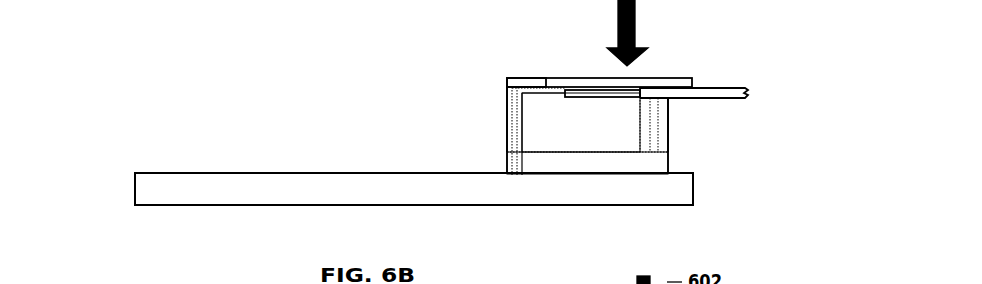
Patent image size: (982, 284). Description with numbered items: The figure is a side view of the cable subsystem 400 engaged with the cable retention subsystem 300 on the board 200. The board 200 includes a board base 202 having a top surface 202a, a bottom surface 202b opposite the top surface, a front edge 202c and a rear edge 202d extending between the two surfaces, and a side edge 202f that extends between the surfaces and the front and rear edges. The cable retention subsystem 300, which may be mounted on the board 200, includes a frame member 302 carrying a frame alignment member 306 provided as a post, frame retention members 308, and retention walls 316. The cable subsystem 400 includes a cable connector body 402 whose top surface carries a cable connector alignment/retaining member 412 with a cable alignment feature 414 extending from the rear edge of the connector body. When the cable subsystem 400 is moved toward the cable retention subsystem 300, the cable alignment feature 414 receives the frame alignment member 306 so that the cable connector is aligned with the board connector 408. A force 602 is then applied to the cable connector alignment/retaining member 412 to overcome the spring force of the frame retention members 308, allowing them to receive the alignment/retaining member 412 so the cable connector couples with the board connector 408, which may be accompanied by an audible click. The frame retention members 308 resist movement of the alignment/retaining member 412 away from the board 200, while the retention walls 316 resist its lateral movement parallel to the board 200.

The board 200 is at (371, 137).
The board base 202 is at (457, 189).
The top surface 202a is at (321, 146).
The bottom surface 202b is at (414, 238).
The front edge 202c is at (93, 193).
The rear edge 202d is at (735, 202).
The side edge 202f is at (350, 163).
The cable retention subsystem 300 is at (595, 163).
The frame member 302 is at (603, 196).
The frame alignment member 306 is at (463, 130).
The frame retention member 308 is at (712, 124).
The retention wall 316 is at (556, 165).
The cable subsystem 400 is at (608, 61).
The cable connector body 402 is at (576, 64).
The board connector 408 is at (717, 82).
The cable connector alignment/retaining member 412 is at (622, 55).
The cable alignment feature 414 is at (484, 64).
The force 602 is at (657, 33).